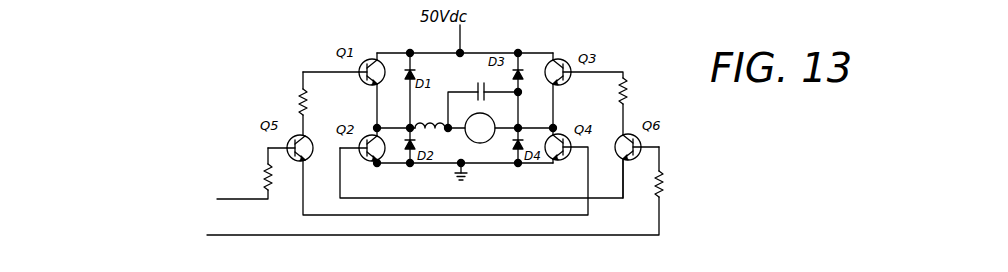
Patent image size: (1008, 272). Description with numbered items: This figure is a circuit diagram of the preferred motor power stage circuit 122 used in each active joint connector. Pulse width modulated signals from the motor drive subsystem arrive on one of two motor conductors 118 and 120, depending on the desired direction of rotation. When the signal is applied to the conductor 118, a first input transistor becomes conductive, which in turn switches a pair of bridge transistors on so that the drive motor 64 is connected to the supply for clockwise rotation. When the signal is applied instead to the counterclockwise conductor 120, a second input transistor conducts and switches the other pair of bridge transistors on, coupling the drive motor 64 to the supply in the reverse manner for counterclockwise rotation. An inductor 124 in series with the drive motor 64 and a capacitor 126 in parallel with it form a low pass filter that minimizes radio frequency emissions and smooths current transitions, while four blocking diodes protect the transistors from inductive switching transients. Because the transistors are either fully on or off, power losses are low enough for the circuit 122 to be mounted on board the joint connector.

The drive motor 64 is at (492, 118).
The motor conductor 118 is at (360, 209).
The motor conductor 120 is at (243, 192).
The motor power stage circuit 122 is at (690, 158).
The inductor 124 is at (437, 133).
The capacitor 126 is at (476, 86).